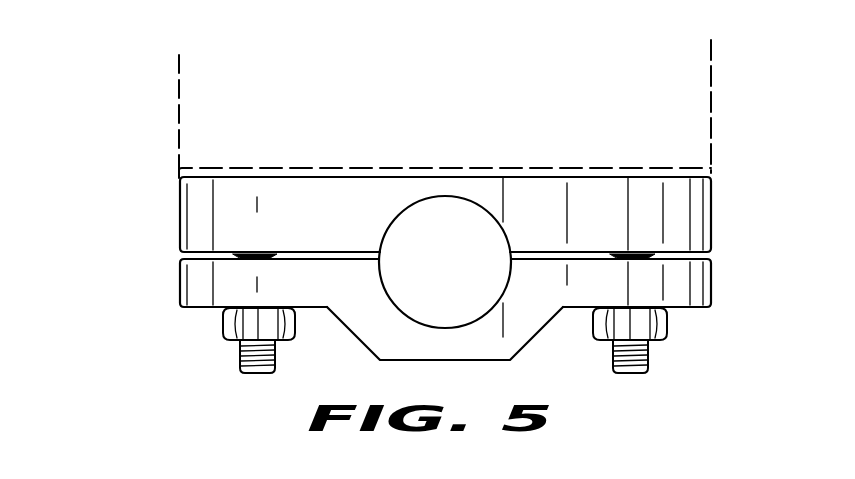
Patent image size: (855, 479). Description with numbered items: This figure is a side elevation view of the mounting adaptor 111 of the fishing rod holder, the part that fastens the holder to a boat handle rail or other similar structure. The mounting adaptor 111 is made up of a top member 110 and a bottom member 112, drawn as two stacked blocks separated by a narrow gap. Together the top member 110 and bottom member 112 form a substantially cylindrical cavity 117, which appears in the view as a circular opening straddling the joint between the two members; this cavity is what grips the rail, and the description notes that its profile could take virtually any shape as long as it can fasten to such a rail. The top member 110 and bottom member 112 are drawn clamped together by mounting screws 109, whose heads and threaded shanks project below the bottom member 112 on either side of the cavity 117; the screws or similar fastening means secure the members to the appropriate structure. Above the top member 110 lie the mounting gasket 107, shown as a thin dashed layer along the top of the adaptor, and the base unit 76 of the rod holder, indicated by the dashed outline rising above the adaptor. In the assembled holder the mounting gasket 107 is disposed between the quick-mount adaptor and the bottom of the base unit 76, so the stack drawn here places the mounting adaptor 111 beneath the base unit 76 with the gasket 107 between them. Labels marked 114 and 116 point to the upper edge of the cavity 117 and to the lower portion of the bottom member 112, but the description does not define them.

The base unit 76 is at (711, 99).
The mounting gasket 107 is at (711, 172).
The mounting screws 109 is at (240, 372).
The top member 110 is at (711, 207).
The mounting adaptor 111 is at (155, 173).
The bottom member 112 is at (711, 278).
The circular opening 114 is at (441, 211).
The lower boss of clamp block 116 is at (443, 303).
The cylindrical cavity 117 is at (443, 267).